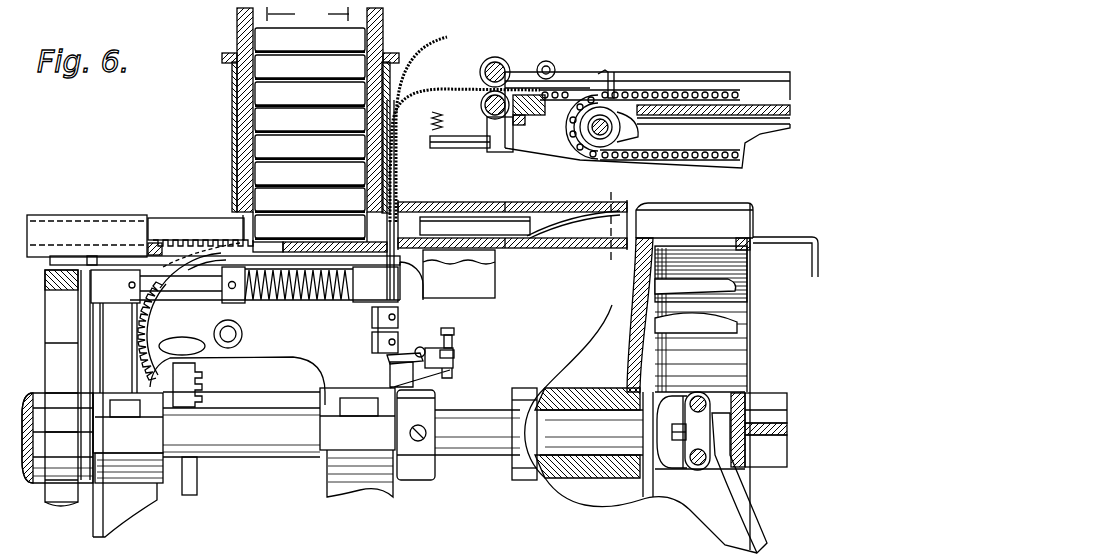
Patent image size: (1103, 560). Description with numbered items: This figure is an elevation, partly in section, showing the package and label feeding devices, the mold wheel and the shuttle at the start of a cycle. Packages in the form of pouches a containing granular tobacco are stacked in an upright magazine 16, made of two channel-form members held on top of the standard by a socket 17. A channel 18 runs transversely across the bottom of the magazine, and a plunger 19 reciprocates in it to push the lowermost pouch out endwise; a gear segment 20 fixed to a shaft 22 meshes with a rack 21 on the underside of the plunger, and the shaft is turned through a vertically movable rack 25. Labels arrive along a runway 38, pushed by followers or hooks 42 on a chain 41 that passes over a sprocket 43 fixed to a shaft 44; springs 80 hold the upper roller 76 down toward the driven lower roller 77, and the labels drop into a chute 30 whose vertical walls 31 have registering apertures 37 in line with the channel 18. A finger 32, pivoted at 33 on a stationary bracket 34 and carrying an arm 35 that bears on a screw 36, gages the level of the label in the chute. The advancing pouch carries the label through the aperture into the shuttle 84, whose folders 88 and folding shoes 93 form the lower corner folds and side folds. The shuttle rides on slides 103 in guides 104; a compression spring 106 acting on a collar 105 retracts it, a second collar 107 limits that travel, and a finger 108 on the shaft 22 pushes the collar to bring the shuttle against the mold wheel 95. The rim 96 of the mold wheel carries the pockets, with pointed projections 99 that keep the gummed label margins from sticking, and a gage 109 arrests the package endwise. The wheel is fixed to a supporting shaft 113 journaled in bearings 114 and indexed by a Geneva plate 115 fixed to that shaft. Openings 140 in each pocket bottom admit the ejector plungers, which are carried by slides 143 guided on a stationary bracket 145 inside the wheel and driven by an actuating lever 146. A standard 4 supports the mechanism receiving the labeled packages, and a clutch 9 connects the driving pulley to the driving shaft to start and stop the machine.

The magazine 16 is at (308, 14).
The socket 17 is at (236, 113).
The pouches a is at (317, 125).
The channel 18 is at (178, 215).
The plunger 19 is at (207, 226).
The rack 21 is at (160, 240).
The second collar 107 is at (132, 282).
The chute 30 is at (457, 58).
The walls 31 is at (398, 195).
The apertures 37 is at (405, 212).
The roller 76 is at (505, 58).
The lower roller 77 is at (513, 130).
The springs 80 is at (460, 130).
The runway 38 is at (752, 80).
The chain 41 is at (672, 90).
The followers or hooks 42 is at (610, 74).
The sprocket 43 is at (640, 134).
The shaft 44 is at (593, 134).
The pointed projections 99 is at (694, 209).
The folders 88 is at (512, 225).
The folding shoes 93 is at (573, 225).
The shuttle 84 is at (498, 250).
The clutch 9 is at (606, 220).
The standard 4 is at (580, 340).
The mold wheel 95 is at (628, 328).
The rim 96 is at (745, 310).
The openings 140 is at (697, 282).
The gage 109 is at (754, 237).
The slides 143 is at (706, 396).
The stationary bracket 145 is at (770, 412).
The actuating lever 146 is at (748, 533).
The supporting shaft 113 is at (477, 456).
The bearings 114 is at (244, 442).
The Geneva plate 115 is at (46, 340).
The slides 103 is at (179, 316).
The gear segment 20 is at (207, 290).
The finger 108 is at (182, 346).
The shaft 22 is at (232, 338).
The compression spring 106 is at (313, 302).
The collar 105 is at (240, 300).
The guides 104 is at (111, 295).
The vertically movable rack 25 is at (196, 383).
The finger 32 is at (410, 352).
The pivot 33 is at (425, 348).
The screw 36 is at (456, 331).
The arm 35 is at (455, 354).
The stationary bracket 34 is at (420, 362).